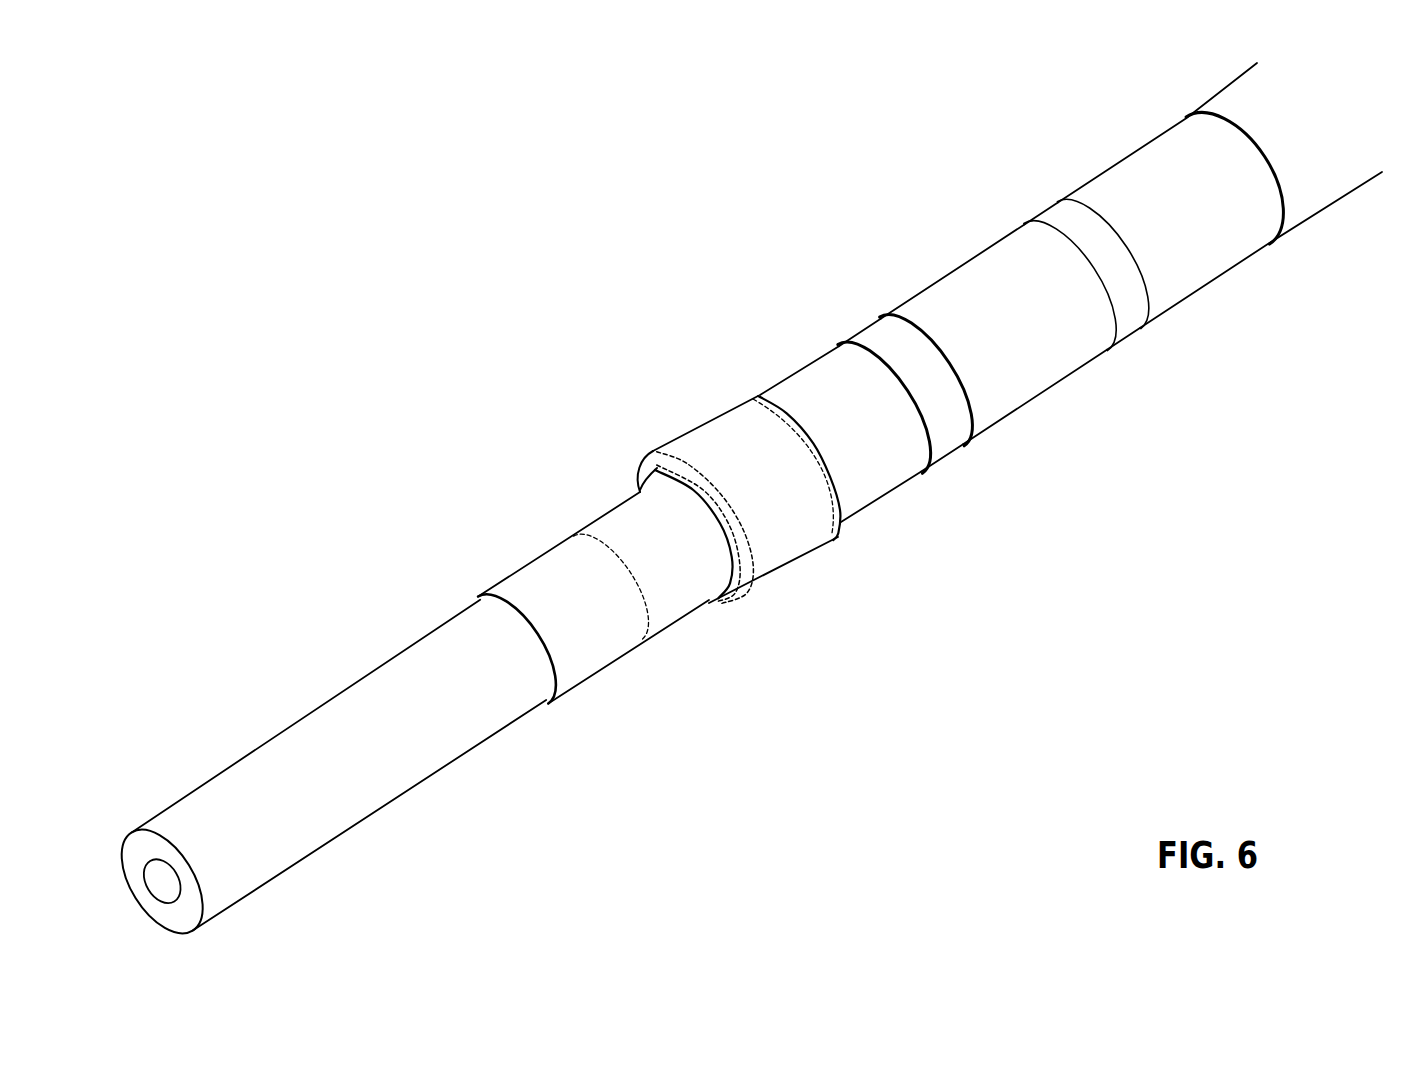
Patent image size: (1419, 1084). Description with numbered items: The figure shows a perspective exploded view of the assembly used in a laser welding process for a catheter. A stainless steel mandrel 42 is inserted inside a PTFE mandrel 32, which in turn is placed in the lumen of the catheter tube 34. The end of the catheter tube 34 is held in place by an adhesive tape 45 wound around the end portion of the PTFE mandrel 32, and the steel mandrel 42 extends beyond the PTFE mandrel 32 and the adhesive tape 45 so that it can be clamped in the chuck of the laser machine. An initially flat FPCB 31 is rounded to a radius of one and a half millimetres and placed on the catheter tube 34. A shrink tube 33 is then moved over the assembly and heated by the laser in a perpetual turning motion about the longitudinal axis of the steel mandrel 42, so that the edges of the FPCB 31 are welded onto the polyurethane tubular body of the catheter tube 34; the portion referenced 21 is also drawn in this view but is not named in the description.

The shaft 21 is at (990, 290).
The FPCB 31 is at (948, 433).
The PTFE mandrel 32 is at (557, 570).
The shrink tube 33 is at (1312, 202).
The catheter tube 34 is at (827, 402).
The stainless steel mandrel 42 is at (373, 730).
The adhesive tape 45 is at (738, 463).